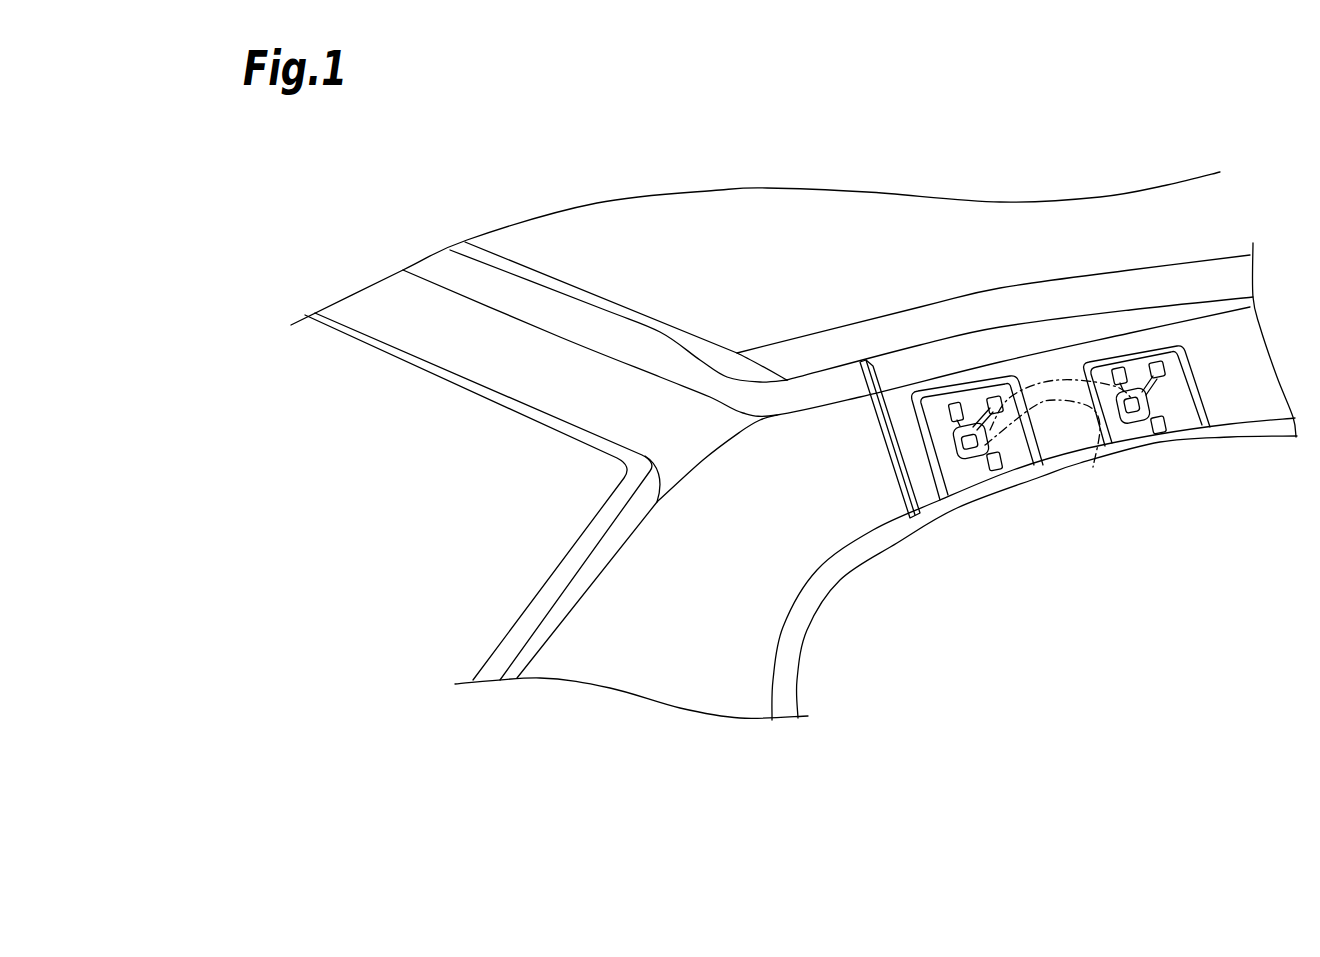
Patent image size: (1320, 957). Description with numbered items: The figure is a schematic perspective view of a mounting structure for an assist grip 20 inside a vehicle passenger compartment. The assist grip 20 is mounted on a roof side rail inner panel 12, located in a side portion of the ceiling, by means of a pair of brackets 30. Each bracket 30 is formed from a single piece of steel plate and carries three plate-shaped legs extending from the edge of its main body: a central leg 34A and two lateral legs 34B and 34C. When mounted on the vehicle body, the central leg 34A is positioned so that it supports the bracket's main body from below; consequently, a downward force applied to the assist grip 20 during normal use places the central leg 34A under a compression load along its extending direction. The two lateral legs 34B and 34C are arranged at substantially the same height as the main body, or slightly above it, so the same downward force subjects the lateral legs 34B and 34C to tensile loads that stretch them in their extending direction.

The roof side rail inner panel 12 is at (1053, 363).
The assist grip 20 is at (1072, 412).
The bracket 30 is at (1010, 452).
The central leg 34A is at (990, 456).
The lateral leg 34B is at (955, 400).
The lateral leg 34C is at (992, 397).